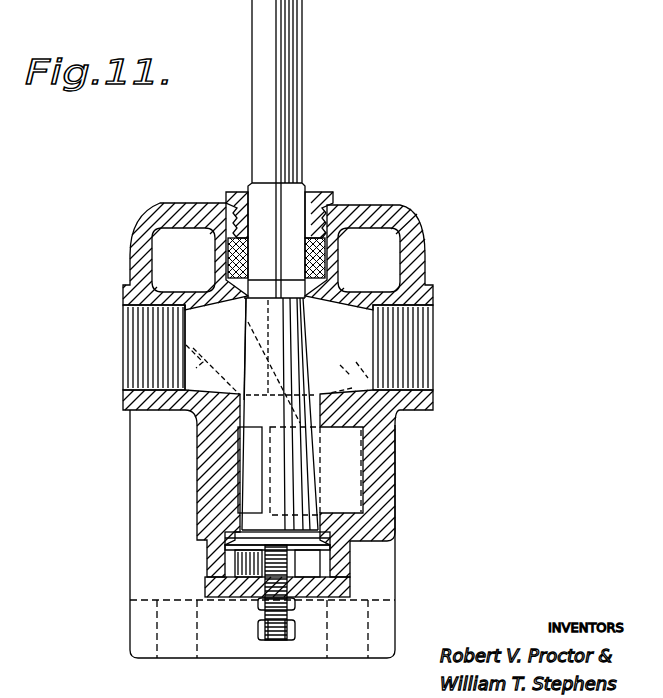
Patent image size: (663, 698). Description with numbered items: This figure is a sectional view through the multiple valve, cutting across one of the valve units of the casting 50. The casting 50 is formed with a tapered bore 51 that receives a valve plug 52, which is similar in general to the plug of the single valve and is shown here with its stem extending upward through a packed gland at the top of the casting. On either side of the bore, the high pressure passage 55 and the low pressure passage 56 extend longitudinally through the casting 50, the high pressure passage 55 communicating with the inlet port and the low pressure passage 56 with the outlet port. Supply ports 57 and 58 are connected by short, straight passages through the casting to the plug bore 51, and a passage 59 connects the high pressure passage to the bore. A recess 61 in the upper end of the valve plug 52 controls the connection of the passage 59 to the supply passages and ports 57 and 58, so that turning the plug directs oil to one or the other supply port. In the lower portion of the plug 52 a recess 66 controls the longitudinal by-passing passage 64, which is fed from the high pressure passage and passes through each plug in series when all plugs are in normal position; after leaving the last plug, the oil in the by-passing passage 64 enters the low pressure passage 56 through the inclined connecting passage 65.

The casting 50 is at (195, 436).
The tapered bore 51 is at (200, 481).
The valve plug 52 is at (345, 458).
The high pressure passage 55 is at (398, 246).
The low pressure passage 56 is at (150, 245).
The supply port 57 is at (425, 349).
The supply port 58 is at (150, 371).
The passage 59 is at (370, 380).
The recess 61 is at (248, 328).
The by-passing passage 64 is at (362, 470).
The inclined passage 65 is at (172, 338).
The recess 66 is at (240, 462).